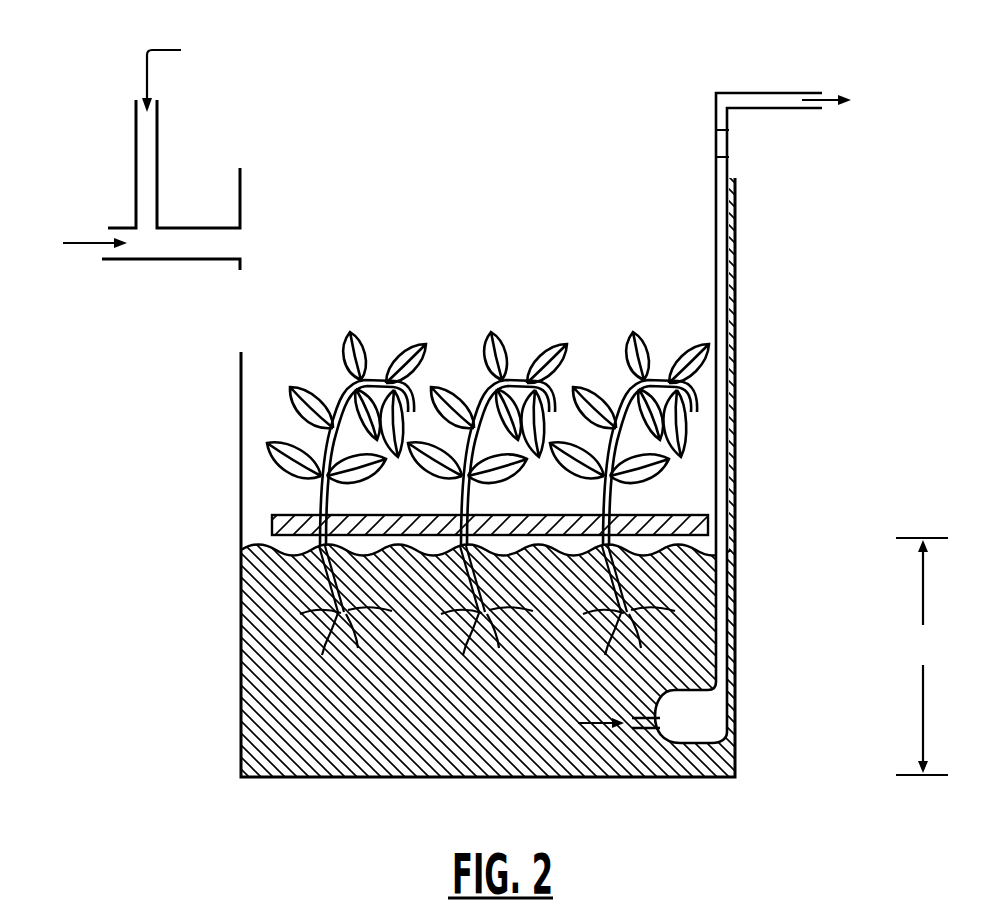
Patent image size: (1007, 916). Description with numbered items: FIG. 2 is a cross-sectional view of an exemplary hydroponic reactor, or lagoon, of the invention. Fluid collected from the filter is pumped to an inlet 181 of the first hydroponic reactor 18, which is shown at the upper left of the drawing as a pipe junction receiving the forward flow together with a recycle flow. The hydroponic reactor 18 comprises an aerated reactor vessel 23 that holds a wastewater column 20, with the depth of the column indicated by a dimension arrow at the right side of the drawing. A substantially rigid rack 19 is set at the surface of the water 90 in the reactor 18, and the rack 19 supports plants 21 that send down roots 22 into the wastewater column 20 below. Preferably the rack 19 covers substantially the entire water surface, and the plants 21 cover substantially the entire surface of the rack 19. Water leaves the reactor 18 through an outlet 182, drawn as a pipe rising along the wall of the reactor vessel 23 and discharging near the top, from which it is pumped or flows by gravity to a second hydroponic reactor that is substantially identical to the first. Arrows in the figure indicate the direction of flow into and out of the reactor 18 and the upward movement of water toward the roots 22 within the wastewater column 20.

The first hydroponic reactor 18 is at (147, 582).
The rack 19 is at (708, 528).
The wastewater column 20 is at (922, 656).
The plants 21 is at (714, 380).
The roots 22 is at (481, 660).
The aerated reactor vessel 23 is at (735, 683).
The water 90 is at (526, 743).
The inlet 181 is at (237, 245).
The outlet 182 is at (765, 100).